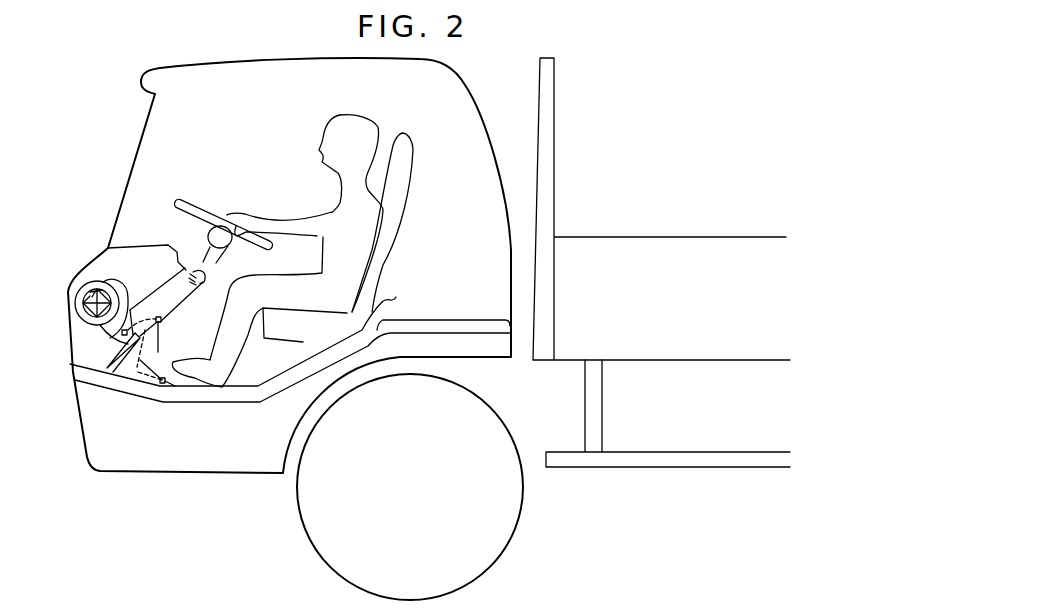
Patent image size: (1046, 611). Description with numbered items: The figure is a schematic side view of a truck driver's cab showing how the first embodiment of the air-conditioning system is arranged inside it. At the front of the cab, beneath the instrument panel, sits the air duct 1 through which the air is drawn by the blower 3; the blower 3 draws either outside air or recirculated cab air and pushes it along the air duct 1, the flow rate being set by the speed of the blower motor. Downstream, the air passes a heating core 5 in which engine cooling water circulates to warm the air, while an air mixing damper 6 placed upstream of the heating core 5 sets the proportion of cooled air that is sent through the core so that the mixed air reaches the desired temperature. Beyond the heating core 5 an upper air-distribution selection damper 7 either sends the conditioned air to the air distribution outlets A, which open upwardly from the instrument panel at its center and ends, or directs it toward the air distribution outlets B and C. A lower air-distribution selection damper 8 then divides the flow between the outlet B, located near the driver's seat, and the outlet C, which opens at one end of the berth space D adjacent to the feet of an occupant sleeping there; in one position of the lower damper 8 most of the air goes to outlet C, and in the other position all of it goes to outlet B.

The air duct 1 is at (134, 301).
The blower 3 is at (77, 297).
The heating core 5 is at (113, 336).
The air mixing damper 6 is at (131, 302).
The upper air-distribution selection damper 7 is at (162, 320).
The lower air-distribution selection damper 8 is at (133, 364).
The air distribution outlets A is at (205, 285).
The air distribution outlet B is at (168, 356).
The air distribution outlet C is at (383, 299).
The berth space D is at (460, 265).